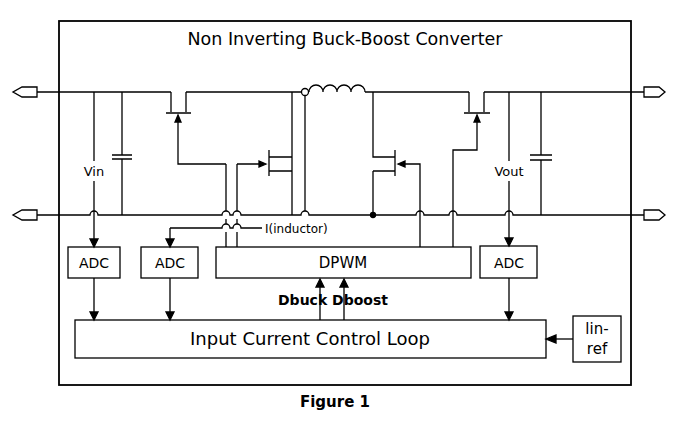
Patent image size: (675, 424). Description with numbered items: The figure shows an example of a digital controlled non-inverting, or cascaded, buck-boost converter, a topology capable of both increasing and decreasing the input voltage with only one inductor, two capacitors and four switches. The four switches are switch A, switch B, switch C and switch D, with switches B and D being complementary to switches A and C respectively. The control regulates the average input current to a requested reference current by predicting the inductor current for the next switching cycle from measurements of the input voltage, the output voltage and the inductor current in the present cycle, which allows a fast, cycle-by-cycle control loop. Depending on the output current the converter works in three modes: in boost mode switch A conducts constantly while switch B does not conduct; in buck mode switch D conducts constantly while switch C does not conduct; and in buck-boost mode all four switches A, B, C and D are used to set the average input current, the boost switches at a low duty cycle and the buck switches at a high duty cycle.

The switch A is at (216, 119).
The switch B is at (280, 153).
The switch C is at (396, 169).
The switch D is at (471, 159).